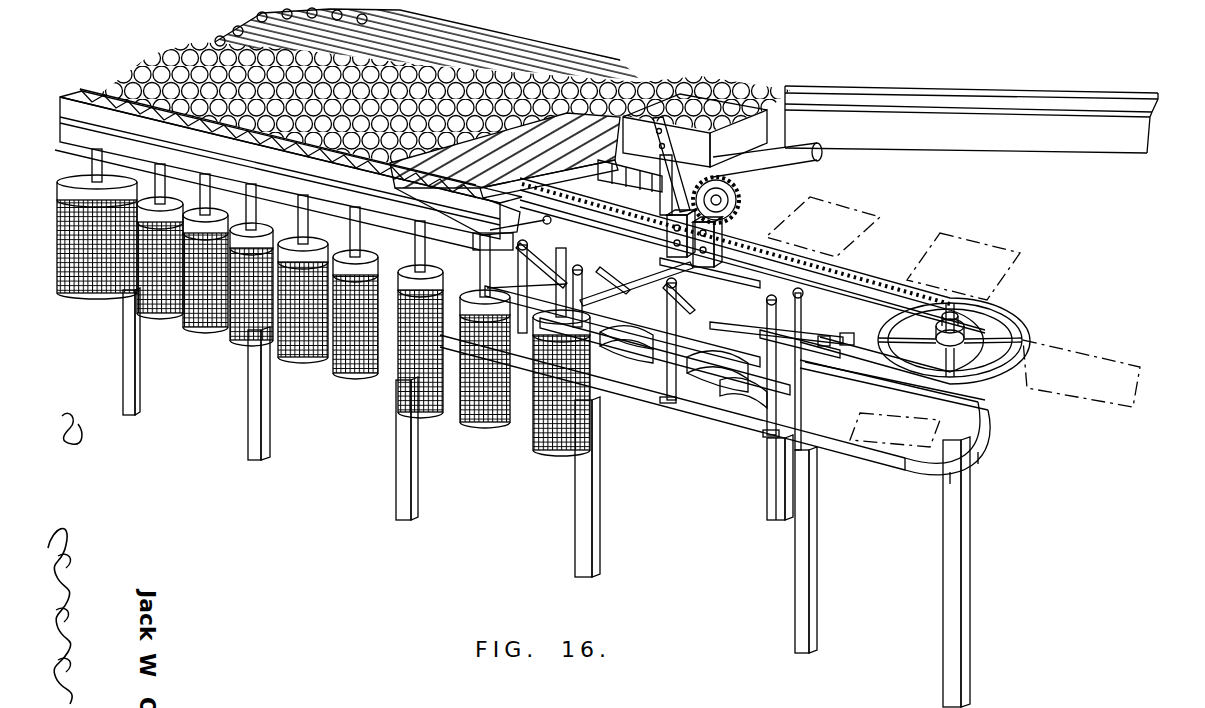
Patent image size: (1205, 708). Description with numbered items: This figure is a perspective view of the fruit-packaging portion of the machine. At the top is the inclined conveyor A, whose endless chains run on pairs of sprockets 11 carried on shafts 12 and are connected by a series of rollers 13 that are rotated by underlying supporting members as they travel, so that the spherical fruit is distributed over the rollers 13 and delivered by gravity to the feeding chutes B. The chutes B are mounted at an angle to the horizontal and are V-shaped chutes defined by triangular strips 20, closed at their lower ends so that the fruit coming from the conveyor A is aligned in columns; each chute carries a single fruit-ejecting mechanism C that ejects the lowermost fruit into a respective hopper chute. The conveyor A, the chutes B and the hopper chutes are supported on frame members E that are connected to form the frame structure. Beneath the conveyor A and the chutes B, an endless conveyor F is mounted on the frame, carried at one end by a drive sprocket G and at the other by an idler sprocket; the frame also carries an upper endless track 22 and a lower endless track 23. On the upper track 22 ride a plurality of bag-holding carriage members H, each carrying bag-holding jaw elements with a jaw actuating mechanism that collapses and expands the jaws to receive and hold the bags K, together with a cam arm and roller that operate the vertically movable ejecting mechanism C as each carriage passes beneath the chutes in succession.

The conveyor A is at (540, 47).
The rollers 13 is at (673, 77).
The triangular strips 20 is at (446, 188).
The fruit-ejecting mechanism C is at (464, 211).
The frame members E is at (514, 238).
The feeding chutes B is at (556, 224).
The sprockets 11 is at (727, 215).
The shafts 12 is at (755, 229).
The endless conveyor F is at (880, 296).
The drive sprocket G is at (873, 335).
The upper endless track 22 is at (986, 392).
The lower endless track 23 is at (903, 477).
The bag-holding carriage members H is at (706, 390).
The bags K is at (226, 350).